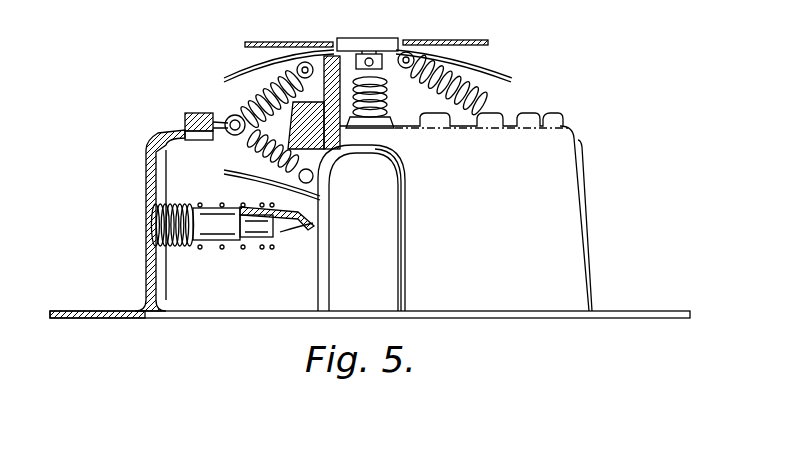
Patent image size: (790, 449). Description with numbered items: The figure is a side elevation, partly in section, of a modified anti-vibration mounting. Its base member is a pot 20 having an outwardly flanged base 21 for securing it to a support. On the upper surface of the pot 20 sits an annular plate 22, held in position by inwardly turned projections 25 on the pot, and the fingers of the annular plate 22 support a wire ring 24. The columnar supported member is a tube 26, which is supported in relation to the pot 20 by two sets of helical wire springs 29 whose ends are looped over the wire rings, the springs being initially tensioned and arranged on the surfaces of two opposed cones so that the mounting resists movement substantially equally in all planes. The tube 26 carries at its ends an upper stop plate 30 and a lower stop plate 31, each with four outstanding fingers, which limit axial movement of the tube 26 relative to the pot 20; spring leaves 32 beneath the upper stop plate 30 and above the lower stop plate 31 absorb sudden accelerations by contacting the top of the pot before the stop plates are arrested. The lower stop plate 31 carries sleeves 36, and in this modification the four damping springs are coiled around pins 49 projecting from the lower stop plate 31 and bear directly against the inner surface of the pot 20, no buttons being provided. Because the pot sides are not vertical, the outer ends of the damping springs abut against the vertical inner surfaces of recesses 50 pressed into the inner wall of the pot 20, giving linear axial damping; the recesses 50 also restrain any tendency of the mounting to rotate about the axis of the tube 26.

The pot 20 is at (572, 222).
The outwardly flanged base 21 is at (663, 311).
The annular plate 22 is at (196, 118).
The wire ring 24 is at (229, 117).
The inwardly turned projections 25 is at (518, 112).
The tube 26 is at (380, 50).
The helical wire springs 29 is at (258, 100).
The upper stop plate 30 is at (458, 40).
The lower stop plate 31 is at (305, 231).
The spring leaves 32 is at (508, 74).
The sleeves 36 is at (263, 246).
The pins 49 is at (221, 247).
The recesses 50 is at (152, 165).